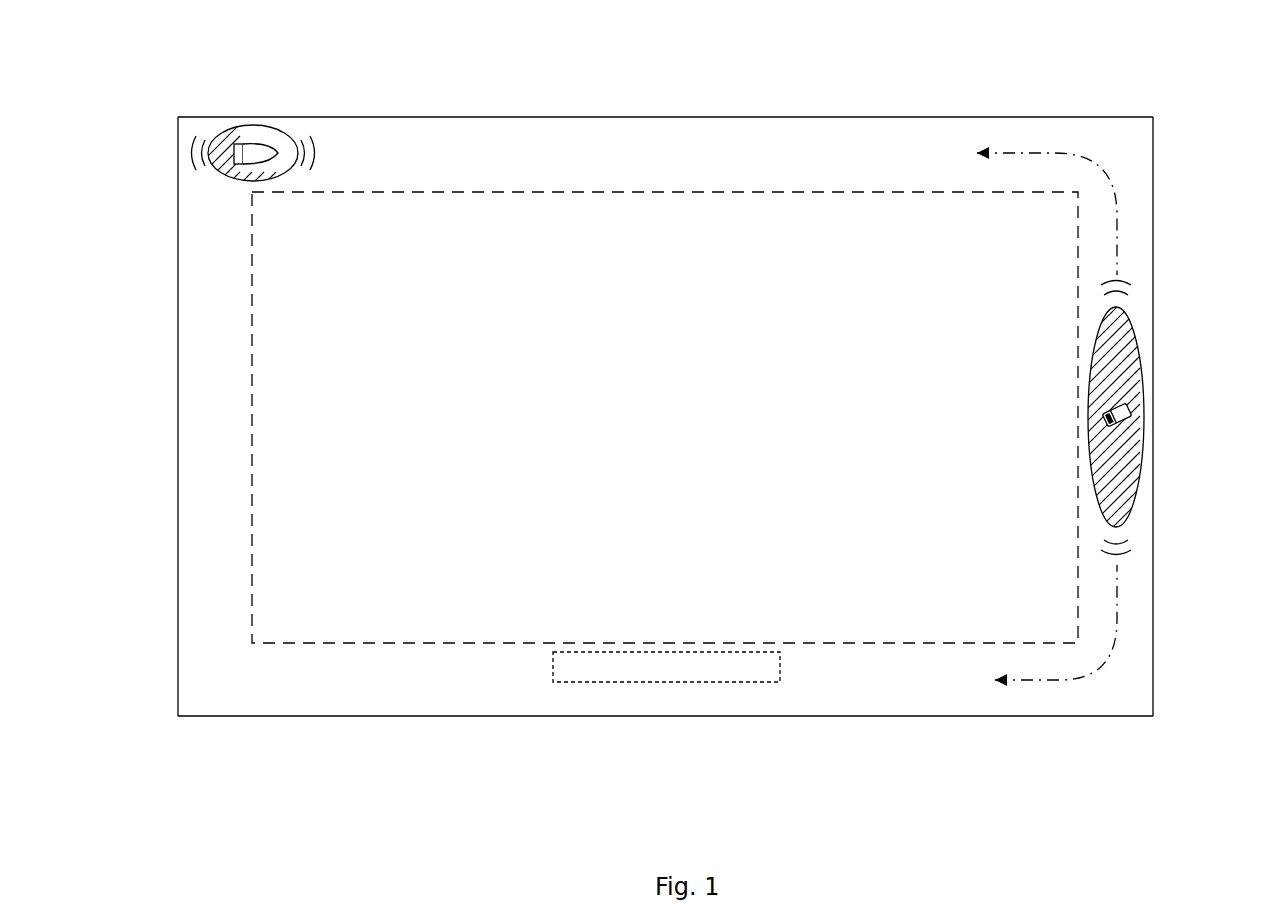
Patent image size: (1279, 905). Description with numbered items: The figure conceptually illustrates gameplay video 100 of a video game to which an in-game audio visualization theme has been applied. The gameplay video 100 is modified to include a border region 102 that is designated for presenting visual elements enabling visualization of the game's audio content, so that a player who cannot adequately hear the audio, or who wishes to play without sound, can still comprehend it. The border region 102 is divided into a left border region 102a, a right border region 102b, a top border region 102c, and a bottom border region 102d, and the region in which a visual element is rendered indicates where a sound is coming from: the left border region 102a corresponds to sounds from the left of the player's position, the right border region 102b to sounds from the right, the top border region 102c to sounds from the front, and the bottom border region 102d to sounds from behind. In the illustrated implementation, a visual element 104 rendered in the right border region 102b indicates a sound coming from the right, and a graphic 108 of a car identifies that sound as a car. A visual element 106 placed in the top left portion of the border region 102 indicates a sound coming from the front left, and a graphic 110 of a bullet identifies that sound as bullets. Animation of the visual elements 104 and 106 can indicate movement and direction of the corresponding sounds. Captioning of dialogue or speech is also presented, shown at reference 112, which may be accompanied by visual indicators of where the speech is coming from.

The gameplay video 100 is at (671, 418).
The border region 102 is at (665, 392).
The left border region 102a is at (182, 344).
The right border region 102b is at (1149, 271).
The top border region 102c is at (594, 124).
The bottom border region 102d is at (811, 707).
The visual element 104 is at (1143, 380).
The visual element 106 is at (253, 130).
The graphic of a car 108 is at (1130, 418).
The graphic of a bullet 110 is at (246, 164).
The captioning of dialogue or speech 112 is at (553, 668).